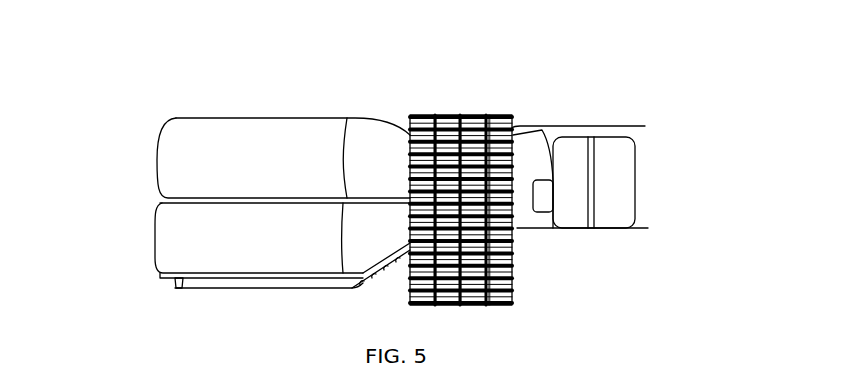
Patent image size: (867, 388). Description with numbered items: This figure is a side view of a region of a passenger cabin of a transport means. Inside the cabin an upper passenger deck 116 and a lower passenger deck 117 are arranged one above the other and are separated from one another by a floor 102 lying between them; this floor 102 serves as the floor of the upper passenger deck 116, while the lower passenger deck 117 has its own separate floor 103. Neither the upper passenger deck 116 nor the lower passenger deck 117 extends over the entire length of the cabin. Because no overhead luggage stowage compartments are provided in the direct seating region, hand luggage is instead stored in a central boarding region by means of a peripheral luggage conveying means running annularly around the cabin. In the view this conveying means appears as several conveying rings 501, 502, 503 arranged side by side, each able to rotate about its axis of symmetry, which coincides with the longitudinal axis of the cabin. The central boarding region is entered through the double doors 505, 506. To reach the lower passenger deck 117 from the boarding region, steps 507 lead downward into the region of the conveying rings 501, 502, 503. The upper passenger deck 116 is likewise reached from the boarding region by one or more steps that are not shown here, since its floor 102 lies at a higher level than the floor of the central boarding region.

The floor 102 is at (200, 197).
The upper passenger deck 116 is at (165, 148).
The lower passenger deck 117 is at (157, 240).
The separate floor 103 is at (185, 277).
The conveying ring 501 is at (422, 115).
The conveying ring 502 is at (448, 115).
The conveying ring 503 is at (472, 115).
The double door 505 is at (507, 115).
The double door 506 is at (575, 222).
The steps 507 is at (380, 277).